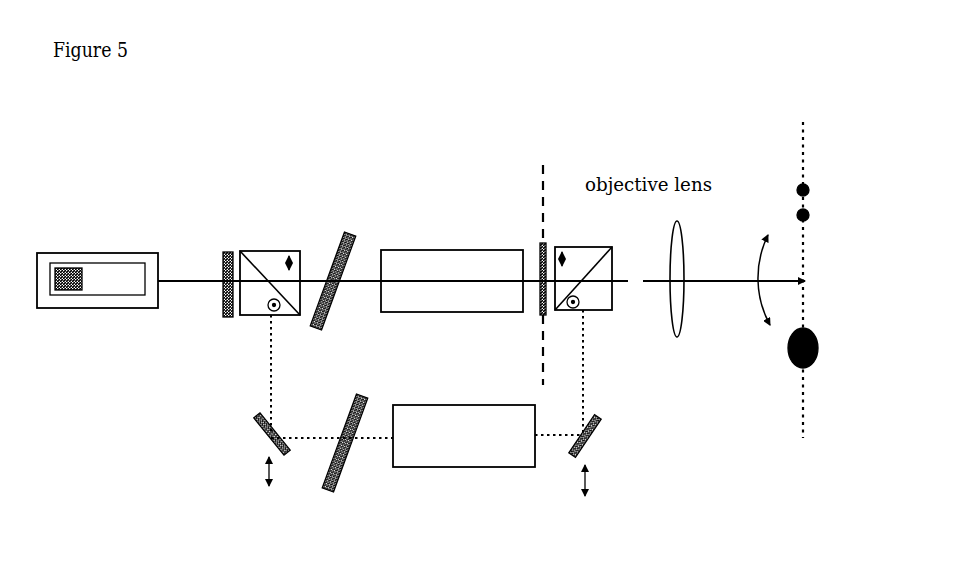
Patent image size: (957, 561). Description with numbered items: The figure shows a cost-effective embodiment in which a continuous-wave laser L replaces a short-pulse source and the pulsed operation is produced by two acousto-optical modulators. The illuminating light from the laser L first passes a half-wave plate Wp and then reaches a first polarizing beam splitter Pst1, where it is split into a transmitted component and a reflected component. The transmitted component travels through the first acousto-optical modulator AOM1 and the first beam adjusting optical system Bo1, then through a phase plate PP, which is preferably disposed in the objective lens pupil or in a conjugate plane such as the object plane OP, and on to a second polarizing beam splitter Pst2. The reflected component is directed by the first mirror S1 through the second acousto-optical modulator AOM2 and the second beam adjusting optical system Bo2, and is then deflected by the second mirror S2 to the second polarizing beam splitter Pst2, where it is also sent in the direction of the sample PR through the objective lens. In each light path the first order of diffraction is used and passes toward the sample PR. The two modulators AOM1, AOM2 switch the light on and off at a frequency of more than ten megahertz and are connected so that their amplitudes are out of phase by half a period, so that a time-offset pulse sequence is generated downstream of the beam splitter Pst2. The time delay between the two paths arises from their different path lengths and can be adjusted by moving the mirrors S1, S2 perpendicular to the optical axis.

The laser L is at (97, 268).
The lambda/2 plate Wp is at (228, 320).
The first polarizing beam splitter Pst1 is at (270, 271).
The first acousto-optical modulator AOM1 is at (350, 378).
The first beam adjusting optical system Bo1 is at (452, 295).
The phase plate PP is at (542, 242).
The object plane OP is at (550, 258).
The second polarizing beam splitter Pst2 is at (582, 266).
The first deflecting mirror S1 is at (261, 449).
The second acousto-optical modulator AOM2 is at (360, 542).
The second beam adjusting optical system Bo2 is at (464, 453).
The second deflecting mirror S2 is at (597, 455).
The sample PR is at (852, 303).